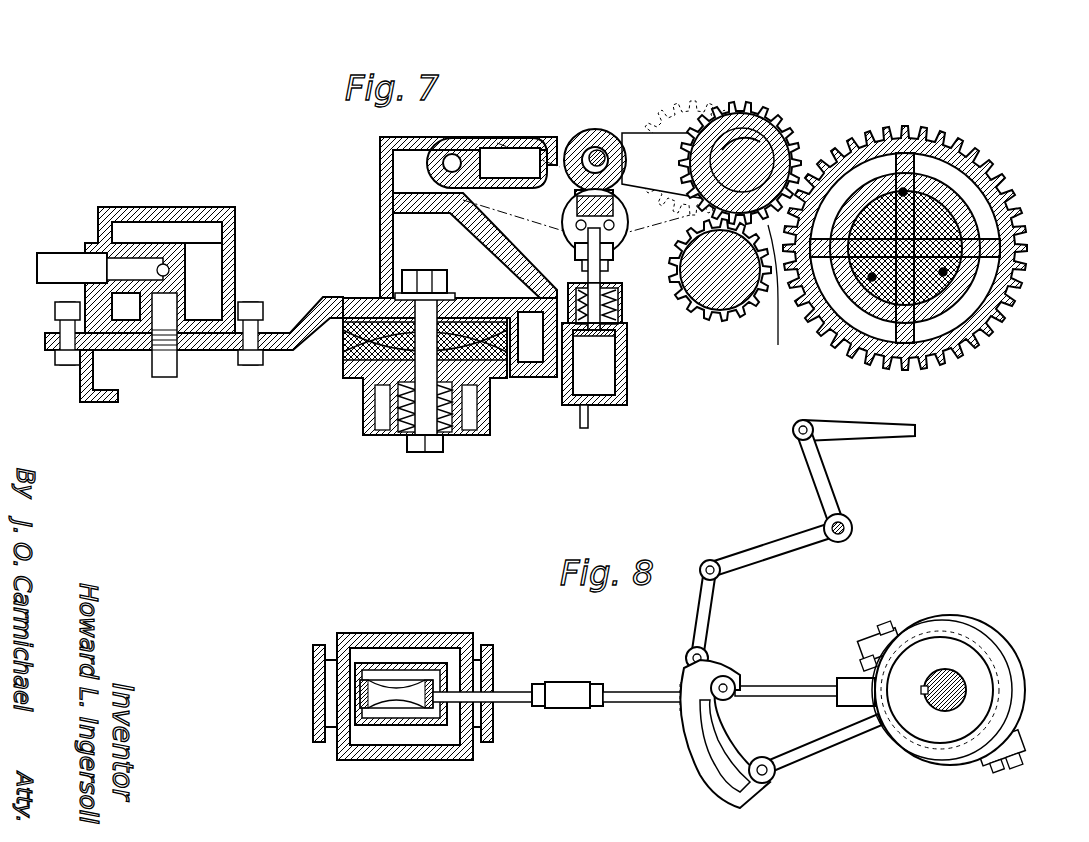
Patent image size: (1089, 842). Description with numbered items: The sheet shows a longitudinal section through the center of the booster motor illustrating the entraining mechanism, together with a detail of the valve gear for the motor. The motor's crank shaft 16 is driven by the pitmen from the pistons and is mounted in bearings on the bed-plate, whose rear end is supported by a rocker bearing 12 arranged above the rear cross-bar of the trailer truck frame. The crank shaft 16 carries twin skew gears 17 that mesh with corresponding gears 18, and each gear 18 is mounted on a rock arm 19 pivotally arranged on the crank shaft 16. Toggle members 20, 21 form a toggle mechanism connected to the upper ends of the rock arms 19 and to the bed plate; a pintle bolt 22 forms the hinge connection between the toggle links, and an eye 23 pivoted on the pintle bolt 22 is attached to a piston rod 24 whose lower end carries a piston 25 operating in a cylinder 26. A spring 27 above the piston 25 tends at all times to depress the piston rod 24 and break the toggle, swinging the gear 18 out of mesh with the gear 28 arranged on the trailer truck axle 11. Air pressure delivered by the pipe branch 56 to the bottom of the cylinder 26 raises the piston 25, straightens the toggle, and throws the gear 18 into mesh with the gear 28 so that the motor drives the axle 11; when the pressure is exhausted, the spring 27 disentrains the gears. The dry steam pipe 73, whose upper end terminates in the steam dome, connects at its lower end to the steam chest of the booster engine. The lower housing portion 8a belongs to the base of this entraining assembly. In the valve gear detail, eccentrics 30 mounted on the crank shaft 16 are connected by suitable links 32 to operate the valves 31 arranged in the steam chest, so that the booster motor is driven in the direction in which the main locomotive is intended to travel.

In FIG. 7, the dry steam pipe 73 is at (50, 253).
In FIG. 7, the spring housing 8a is at (367, 410).
In FIG. 7, the rocker bearing 12 is at (455, 323).
In FIG. 7, the toggle member 21 is at (494, 138).
In FIG. 7, the toggle member 20 is at (655, 133).
In FIG. 7, the pintle bolt 22 is at (604, 138).
In FIG. 7, the eye 23 is at (580, 140).
In FIG. 7, the piston rod 24 is at (600, 278).
In FIG. 7, the spring 27 is at (624, 311).
In FIG. 7, the cylinder 26 is at (628, 388).
In FIG. 7, the piston 25 is at (588, 338).
In FIG. 7, the pipe branch 56 is at (588, 430).
In FIG. 7, the gear 18 is at (775, 122).
In FIG. 7, the skew gear 17 is at (673, 285).
In FIG. 7, the crank shaft 16 is at (715, 298).
In FIG. 8, the crank shaft 16 is at (955, 686).
In FIG. 7, the rock arm 19 is at (778, 293).
In FIG. 7, the gear 28 is at (952, 135).
In FIG. 7, the axle 11 is at (950, 236).
In FIG. 8, the valve 31 is at (396, 694).
In FIG. 8, the linkage 32 is at (795, 553).
In FIG. 8, the eccentric 30 is at (932, 632).